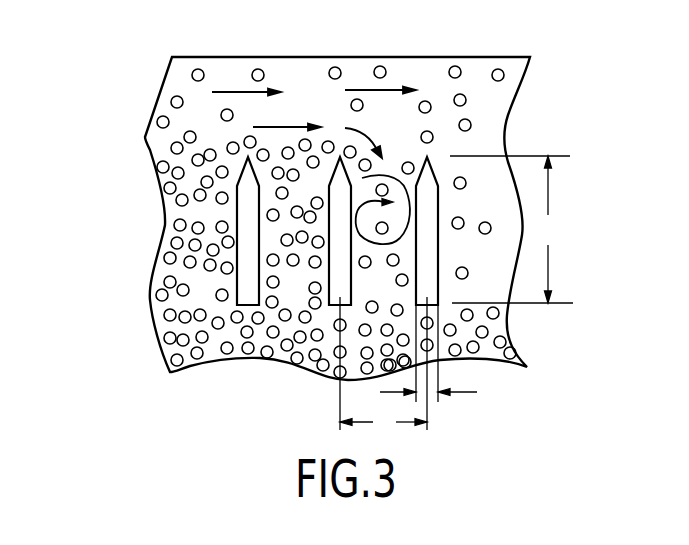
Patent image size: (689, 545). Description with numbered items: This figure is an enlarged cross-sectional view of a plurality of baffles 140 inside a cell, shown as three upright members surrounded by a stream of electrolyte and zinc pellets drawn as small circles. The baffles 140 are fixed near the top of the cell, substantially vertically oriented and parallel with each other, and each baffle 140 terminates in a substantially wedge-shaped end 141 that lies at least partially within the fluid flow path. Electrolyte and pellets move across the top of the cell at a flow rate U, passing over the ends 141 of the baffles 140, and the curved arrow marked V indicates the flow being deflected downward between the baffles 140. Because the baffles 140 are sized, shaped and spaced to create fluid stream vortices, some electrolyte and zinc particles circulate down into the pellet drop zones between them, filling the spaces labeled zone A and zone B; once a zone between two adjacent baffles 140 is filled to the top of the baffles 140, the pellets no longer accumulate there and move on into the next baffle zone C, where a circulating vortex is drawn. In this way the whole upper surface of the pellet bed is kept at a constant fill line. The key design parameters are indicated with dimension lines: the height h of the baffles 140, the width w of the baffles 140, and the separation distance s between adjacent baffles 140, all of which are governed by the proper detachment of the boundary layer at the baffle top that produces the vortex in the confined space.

The baffle 140 is at (234, 220).
The wedge-shaped end 141 is at (178, 155).
The pellet zone A is at (210, 298).
The pellet zone B is at (301, 298).
The next baffle zone C is at (388, 297).
The flow rate U is at (320, 107).
The deflected flow velocity V is at (408, 147).
The height of the baffles h is at (511, 229).
The separation distance s is at (383, 366).
The width of the baffles w is at (428, 354).